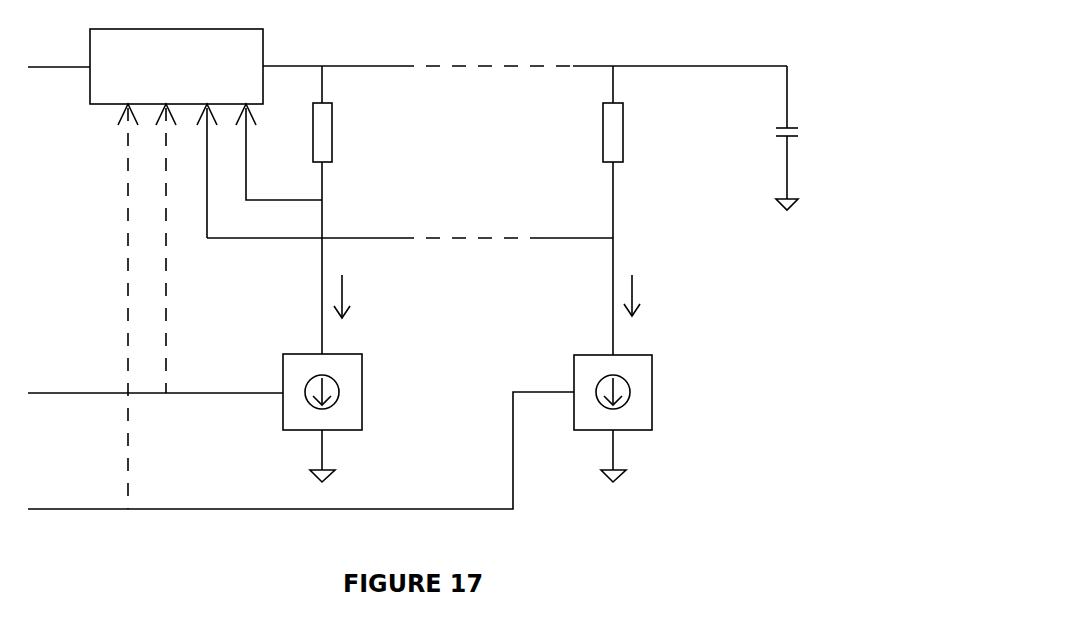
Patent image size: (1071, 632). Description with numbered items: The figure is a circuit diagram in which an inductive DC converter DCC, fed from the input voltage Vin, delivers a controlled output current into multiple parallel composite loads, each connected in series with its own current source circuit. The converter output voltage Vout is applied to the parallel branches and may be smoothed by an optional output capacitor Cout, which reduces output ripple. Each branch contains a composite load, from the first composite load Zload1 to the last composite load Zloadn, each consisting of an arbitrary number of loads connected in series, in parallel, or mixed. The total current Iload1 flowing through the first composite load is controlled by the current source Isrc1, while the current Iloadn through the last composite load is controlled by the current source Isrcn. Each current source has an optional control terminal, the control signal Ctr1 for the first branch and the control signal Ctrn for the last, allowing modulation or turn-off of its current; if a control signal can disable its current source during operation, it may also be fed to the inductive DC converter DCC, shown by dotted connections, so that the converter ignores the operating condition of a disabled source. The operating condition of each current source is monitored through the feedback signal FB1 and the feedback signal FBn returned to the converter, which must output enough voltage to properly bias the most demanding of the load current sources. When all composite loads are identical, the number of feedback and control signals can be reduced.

The inductive DC converter DCC is at (166, 80).
The input voltage Vin is at (59, 55).
The output voltage Vout is at (525, 54).
The control signal Ctr(1) Ctr1 is at (155, 250).
The control signal Ctr(n) Ctrn is at (301, 309).
The feedback signal FB(1) FB1 is at (284, 154).
The feedback signal FB(n) FBn is at (410, 173).
The composite load Zload(1) Zload1 is at (376, 210).
The composite load Zload(n) Zloadn is at (666, 210).
The load current Iload(1) Iload1 is at (384, 296).
The load current Iload(n) Iloadn is at (671, 295).
The current source Isrc(1) Isrc1 is at (341, 418).
The current source Isrc(n) Isrcn is at (632, 418).
The output capacitor Cout is at (812, 138).